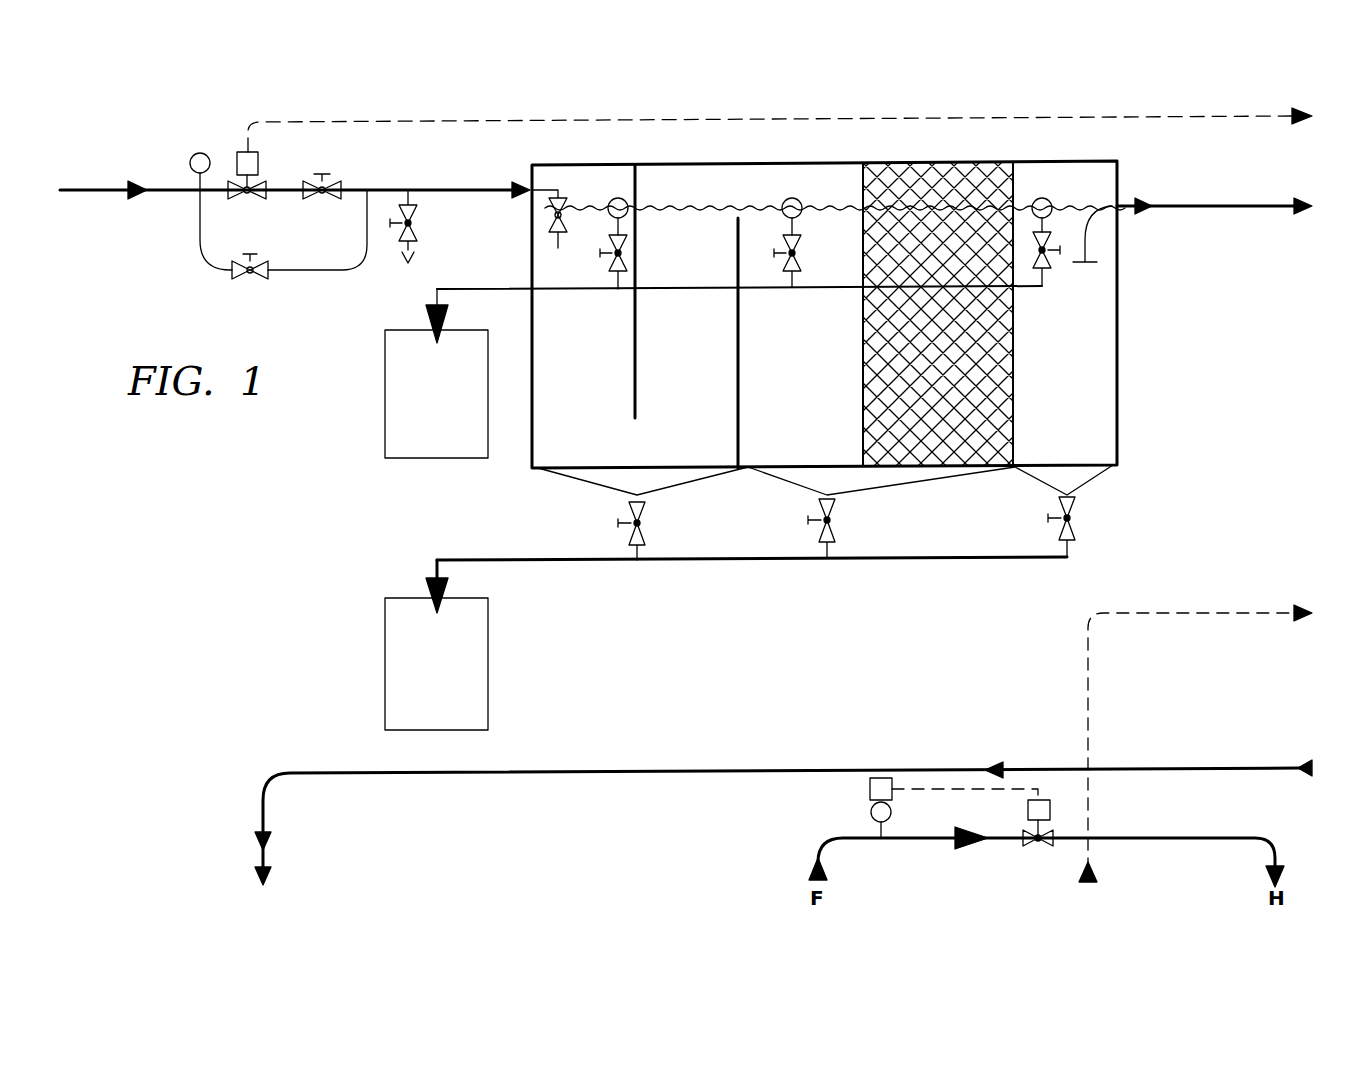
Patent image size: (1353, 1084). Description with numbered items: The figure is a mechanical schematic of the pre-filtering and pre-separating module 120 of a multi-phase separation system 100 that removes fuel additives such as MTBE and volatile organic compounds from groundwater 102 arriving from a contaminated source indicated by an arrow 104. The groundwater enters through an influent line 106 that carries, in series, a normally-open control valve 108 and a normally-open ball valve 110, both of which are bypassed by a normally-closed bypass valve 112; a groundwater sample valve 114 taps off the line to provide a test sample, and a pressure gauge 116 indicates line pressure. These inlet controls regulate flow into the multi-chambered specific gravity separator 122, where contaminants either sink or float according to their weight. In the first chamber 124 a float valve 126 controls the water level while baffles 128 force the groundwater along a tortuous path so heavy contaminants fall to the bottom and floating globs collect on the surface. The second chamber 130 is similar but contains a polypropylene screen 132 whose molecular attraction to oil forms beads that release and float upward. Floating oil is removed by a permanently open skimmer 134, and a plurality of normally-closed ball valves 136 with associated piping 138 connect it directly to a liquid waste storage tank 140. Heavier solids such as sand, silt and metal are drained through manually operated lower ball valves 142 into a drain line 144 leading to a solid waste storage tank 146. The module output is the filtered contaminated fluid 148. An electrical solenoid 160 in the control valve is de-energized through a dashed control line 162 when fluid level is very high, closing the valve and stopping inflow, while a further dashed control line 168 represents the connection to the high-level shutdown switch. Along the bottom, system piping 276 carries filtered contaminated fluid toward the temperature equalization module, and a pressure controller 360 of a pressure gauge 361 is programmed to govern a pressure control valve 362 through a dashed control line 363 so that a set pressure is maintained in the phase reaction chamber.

The multi-phase separation system 100 is at (243, 527).
The groundwater 102 is at (692, 218).
The arrow 104 is at (135, 198).
The influent line 106 is at (98, 188).
The control valve 108 is at (262, 186).
The ball valve 110 is at (340, 185).
The bypass valve 112 is at (260, 282).
The groundwater sample valve 114 is at (418, 228).
The pressure gauge 116 is at (198, 152).
The pre-filtering and pre-separating module 120 is at (657, 160).
The specific gravity separator 122 is at (833, 190).
The first chamber 124 is at (552, 425).
The float valve 126 is at (555, 238).
The baffles 128 is at (740, 412).
The second chamber 130 is at (983, 163).
The polypropylene screen 132 is at (895, 165).
The skimmer 134 is at (792, 198).
The ball valves 136 is at (612, 276).
The piping 138 is at (766, 290).
The liquid waste storage tank 140 is at (400, 432).
The lower ball valves 142 is at (650, 548).
The drain line 144 is at (888, 565).
The solid waste storage tank 146 is at (400, 665).
The filtered contaminated fluid 148 is at (1218, 204).
The electrical solenoid 160 is at (237, 162).
The control line 162 is at (525, 125).
The control line 168 is at (1165, 617).
The system piping 276 is at (735, 770).
The pressure controller 360 is at (868, 790).
The pressure gauge 361 is at (870, 812).
The pressure control valve 362 is at (1042, 848).
The control line 363 is at (932, 785).